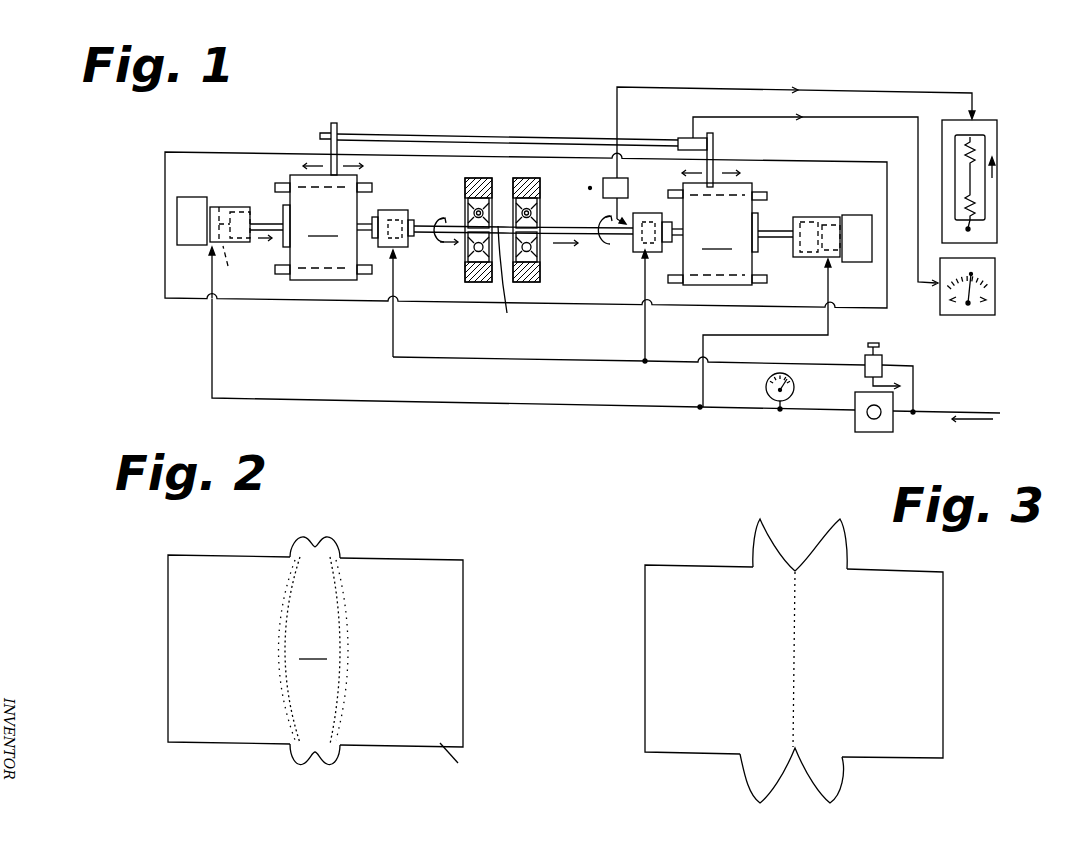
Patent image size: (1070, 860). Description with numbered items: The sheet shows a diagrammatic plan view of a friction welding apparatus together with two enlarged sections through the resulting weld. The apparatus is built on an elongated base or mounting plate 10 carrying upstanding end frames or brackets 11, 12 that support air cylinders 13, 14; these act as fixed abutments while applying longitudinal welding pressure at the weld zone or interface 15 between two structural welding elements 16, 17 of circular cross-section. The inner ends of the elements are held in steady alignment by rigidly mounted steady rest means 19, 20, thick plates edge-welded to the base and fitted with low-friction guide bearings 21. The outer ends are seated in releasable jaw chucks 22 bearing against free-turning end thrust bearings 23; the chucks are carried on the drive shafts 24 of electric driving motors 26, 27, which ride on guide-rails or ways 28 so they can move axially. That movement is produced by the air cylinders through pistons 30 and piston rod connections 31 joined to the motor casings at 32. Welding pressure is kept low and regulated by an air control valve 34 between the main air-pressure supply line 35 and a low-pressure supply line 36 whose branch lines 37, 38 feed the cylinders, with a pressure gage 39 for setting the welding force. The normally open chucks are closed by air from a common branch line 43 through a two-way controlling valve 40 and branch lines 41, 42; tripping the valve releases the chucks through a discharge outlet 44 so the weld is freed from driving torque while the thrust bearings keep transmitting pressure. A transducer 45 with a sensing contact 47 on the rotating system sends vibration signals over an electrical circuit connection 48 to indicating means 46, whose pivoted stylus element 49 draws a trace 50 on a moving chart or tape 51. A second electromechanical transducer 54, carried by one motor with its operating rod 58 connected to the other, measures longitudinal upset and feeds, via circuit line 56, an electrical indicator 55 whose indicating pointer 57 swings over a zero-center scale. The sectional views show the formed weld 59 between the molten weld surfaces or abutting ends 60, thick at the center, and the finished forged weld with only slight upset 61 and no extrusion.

In FIG. 1, the base or mounting plate 10 is at (231, 152).
In FIG. 1, the end frame or bracket 11 is at (189, 198).
In FIG. 1, the end frame or bracket 12 is at (856, 216).
In FIG. 1, the air cylinder 13 is at (226, 206).
In FIG. 1, the air cylinder 14 is at (801, 220).
In FIG. 1, the weld zone or interface 15 is at (505, 283).
In FIG. 1, the welding specimen or structural element 16 is at (439, 229).
In FIG. 2, the welding specimen or structural element 16 is at (225, 570).
In FIG. 3, the welding specimen or structural element 16 is at (685, 573).
In FIG. 1, the welding specimen or structural element 17 is at (577, 232).
In FIG. 2, the welding specimen or structural element 17 is at (417, 573).
In FIG. 3, the welding specimen or structural element 17 is at (907, 575).
In FIG. 1, the steady rest means 19 is at (474, 282).
In FIG. 1, the steady rest means 20 is at (538, 277).
In FIG. 1, the guide bearing 21 is at (470, 247).
In FIG. 1, the jaw chuck 22 is at (398, 246).
In FIG. 1, the end thrust bearing 23 is at (399, 220).
In FIG. 1, the drive shaft 24 is at (363, 224).
In FIG. 1, the electric driving motor 26 is at (323, 227).
In FIG. 1, the electric driving motor 27 is at (717, 234).
In FIG. 1, the guide-rails or ways 28 is at (281, 183).
In FIG. 1, the piston 30 is at (829, 193).
In FIG. 1, the piston rod connection 31 is at (277, 227).
In FIG. 1, the connection with motor casing 32 is at (287, 237).
In FIG. 1, the air control valve 34 is at (874, 432).
In FIG. 1, the main air-pressure supply line 35 is at (936, 409).
In FIG. 1, the low-pressure supply line 36 is at (558, 407).
In FIG. 1, the branch line 37 is at (213, 364).
In FIG. 1, the branch line 38 is at (702, 381).
In FIG. 1, the pressure gage 39 is at (766, 388).
In FIG. 1, the controlling valve 40 is at (882, 360).
In FIG. 1, the branch line 41 is at (394, 331).
In FIG. 1, the branch line 42 is at (645, 330).
In FIG. 1, the common branch line or pipe 43 is at (537, 358).
In FIG. 1, the outlet 44 is at (866, 380).
In FIG. 1, the transducer 45 is at (594, 180).
In FIG. 1, the indicating means 46 is at (980, 122).
In FIG. 1, the sensing contact 47 is at (622, 219).
In FIG. 1, the electrical circuit connection 48 is at (696, 87).
In FIG. 1, the pivoted stylus element 49 is at (986, 210).
In FIG. 1, the trace 50 is at (975, 178).
In FIG. 1, the moving chart or tape 51 is at (986, 143).
In FIG. 1, the electromechanical transducer 54 is at (686, 141).
In FIG. 1, the electrical indicator 55 is at (991, 290).
In FIG. 1, the circuit line 56 is at (899, 118).
In FIG. 1, the indicating pointer 57 is at (958, 283).
In FIG. 1, the operating rod 58 is at (397, 133).
In FIG. 2, the formed weld 59 is at (314, 650).
In FIG. 2, the molten weld surfaces / abutting ends 60 is at (293, 603).
In FIG. 3, the molten weld surfaces / abutting ends 60 is at (797, 595).
In FIG. 2, the upset 61 is at (302, 763).
In FIG. 3, the upset 61 is at (770, 782).